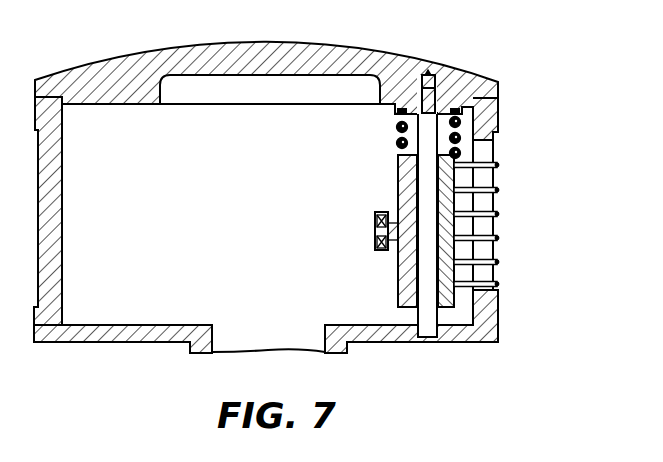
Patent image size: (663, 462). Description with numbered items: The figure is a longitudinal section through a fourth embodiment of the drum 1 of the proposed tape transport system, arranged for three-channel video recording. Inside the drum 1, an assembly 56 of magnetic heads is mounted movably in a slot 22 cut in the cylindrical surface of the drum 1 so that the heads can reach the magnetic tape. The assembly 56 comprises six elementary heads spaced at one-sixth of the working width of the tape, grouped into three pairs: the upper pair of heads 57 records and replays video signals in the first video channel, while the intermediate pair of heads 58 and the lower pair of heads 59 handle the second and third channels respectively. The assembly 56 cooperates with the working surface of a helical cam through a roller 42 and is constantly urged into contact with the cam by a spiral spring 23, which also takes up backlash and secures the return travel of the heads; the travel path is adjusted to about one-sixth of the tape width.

The drum 1 is at (62, 334).
The slot 22 is at (498, 157).
The spring 23 is at (397, 131).
The roller 42 is at (378, 213).
The assembly of magnetic heads 56 is at (450, 308).
The upper pair of heads 57 is at (498, 190).
The intermediate pair of heads 58 is at (498, 238).
The lower pair of heads 59 is at (498, 285).